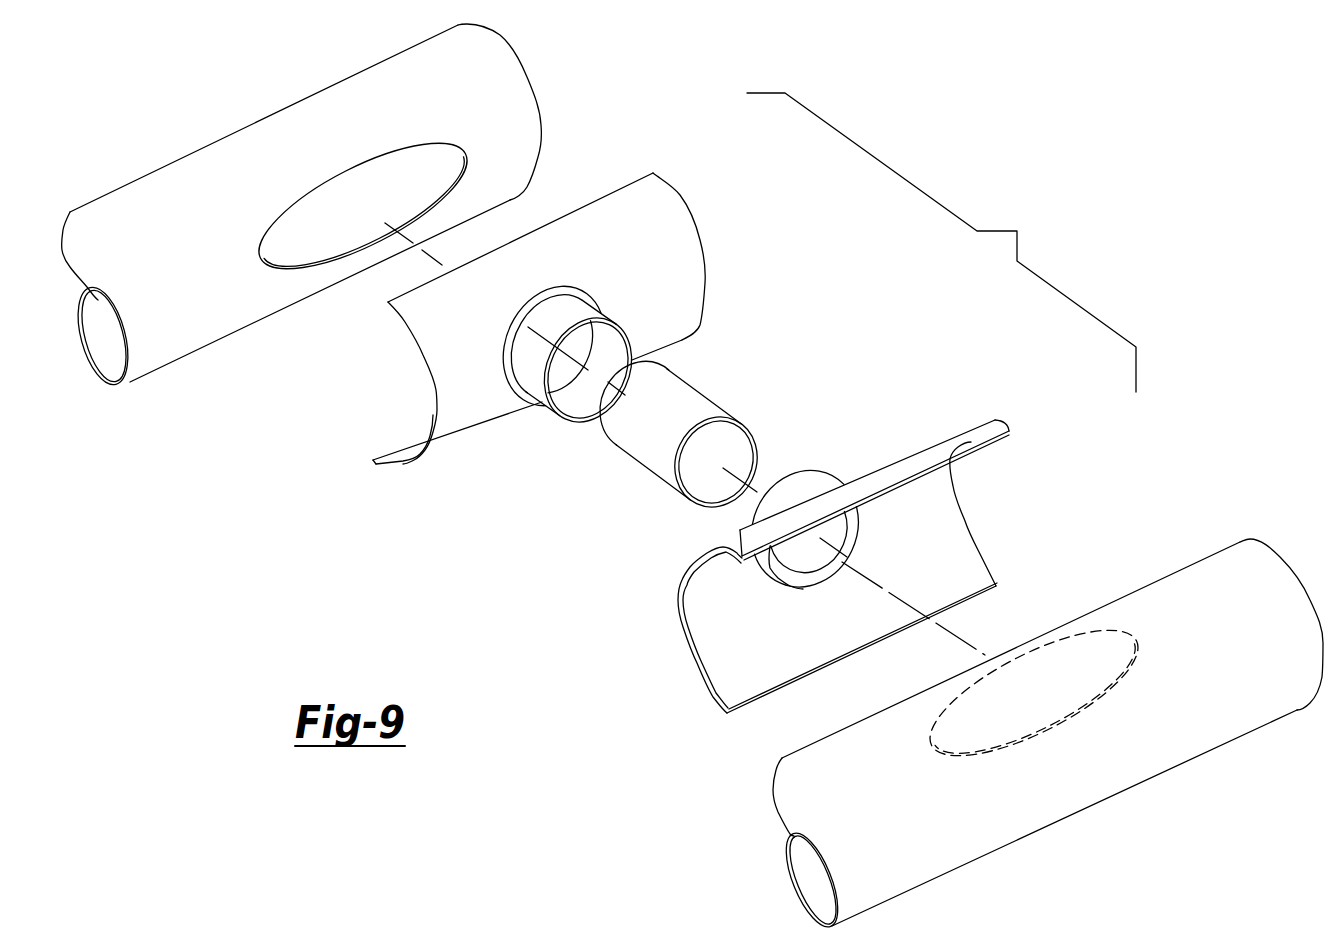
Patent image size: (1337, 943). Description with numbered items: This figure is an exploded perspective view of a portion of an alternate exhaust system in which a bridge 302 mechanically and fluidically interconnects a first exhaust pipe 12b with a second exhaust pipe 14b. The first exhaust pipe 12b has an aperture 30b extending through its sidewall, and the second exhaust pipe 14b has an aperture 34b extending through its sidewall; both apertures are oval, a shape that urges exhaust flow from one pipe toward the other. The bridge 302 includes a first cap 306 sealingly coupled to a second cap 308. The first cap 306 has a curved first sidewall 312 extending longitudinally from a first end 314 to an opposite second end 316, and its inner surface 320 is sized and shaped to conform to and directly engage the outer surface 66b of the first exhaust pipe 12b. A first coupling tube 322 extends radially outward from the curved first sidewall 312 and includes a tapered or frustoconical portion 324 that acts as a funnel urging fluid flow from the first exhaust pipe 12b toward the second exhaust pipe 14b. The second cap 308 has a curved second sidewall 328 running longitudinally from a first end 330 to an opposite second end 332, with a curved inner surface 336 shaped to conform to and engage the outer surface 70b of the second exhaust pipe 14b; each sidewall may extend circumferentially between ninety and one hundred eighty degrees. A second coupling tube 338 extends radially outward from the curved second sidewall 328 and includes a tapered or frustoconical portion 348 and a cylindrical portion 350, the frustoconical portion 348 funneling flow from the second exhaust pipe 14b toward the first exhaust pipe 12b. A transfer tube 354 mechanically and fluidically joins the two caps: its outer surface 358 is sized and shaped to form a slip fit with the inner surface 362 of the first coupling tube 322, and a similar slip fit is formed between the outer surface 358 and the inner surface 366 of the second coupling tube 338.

The first exhaust pipe 12b is at (1048, 736).
The second exhaust pipe 14b is at (293, 202).
The aperture 30b is at (1043, 642).
The aperture 34b is at (336, 280).
The outer surface 66b is at (903, 877).
The outer surface 70b is at (127, 208).
The bridge 302 is at (941, 242).
The first cap 306 is at (948, 427).
The second cap 308 is at (569, 354).
The curved first sidewall 312 is at (794, 587).
The first end 314 is at (682, 612).
The second end 316 is at (958, 523).
The inner surface 320 is at (703, 650).
The first coupling tube 322 is at (802, 478).
The tapered or frustoconical portion 324 is at (870, 581).
The curved second sidewall 328 is at (467, 430).
The first end 330 is at (425, 367).
The second end 332 is at (707, 276).
The curved inner surface 336 is at (422, 455).
The second coupling tube 338 is at (528, 370).
The tapered or frustoconical portion 348 is at (503, 362).
The cylindrical portion 350 is at (587, 367).
The transfer tube 354 is at (677, 448).
The outer surface 358 is at (663, 475).
The inner surface 362 is at (800, 575).
The inner surface 366 is at (567, 405).